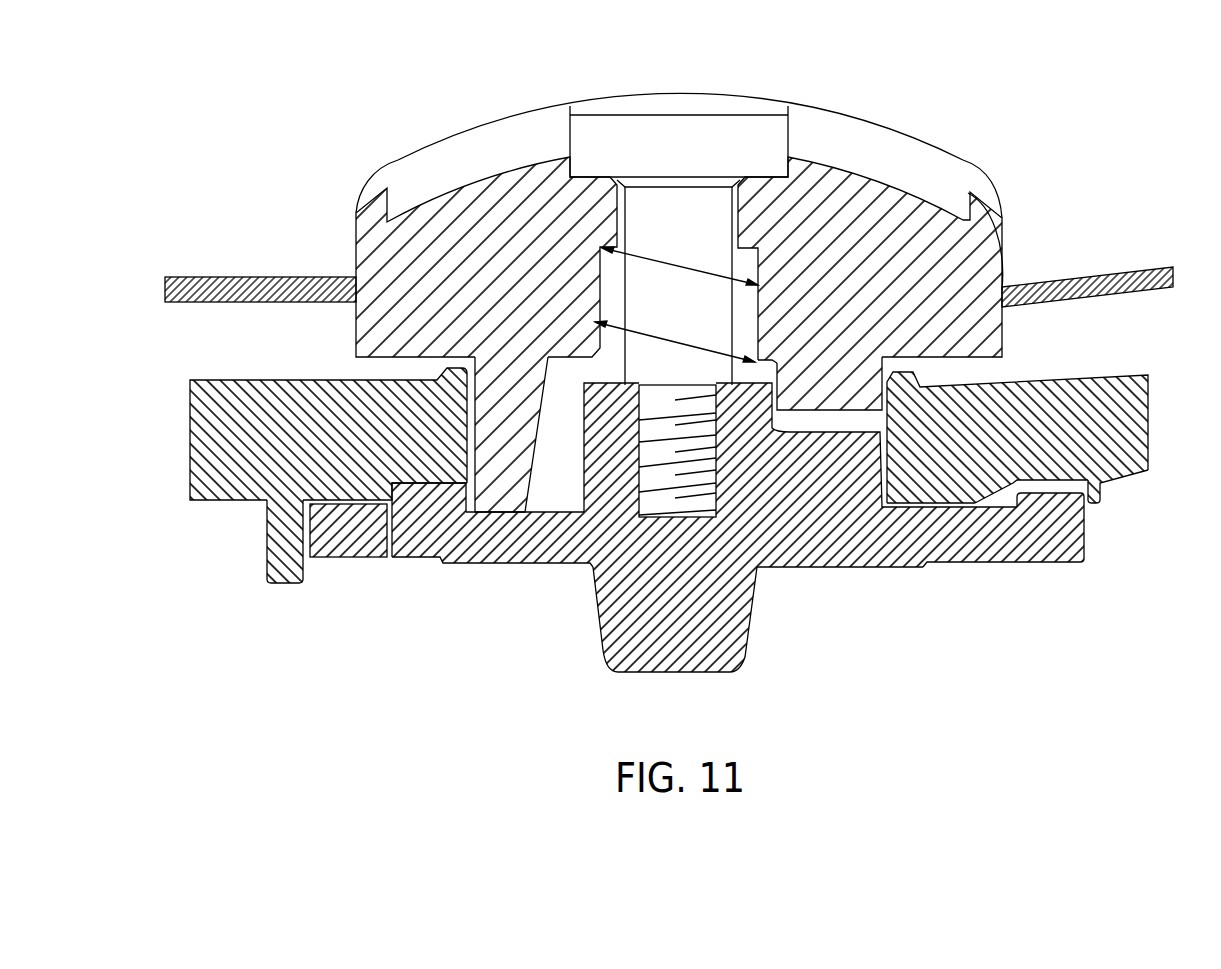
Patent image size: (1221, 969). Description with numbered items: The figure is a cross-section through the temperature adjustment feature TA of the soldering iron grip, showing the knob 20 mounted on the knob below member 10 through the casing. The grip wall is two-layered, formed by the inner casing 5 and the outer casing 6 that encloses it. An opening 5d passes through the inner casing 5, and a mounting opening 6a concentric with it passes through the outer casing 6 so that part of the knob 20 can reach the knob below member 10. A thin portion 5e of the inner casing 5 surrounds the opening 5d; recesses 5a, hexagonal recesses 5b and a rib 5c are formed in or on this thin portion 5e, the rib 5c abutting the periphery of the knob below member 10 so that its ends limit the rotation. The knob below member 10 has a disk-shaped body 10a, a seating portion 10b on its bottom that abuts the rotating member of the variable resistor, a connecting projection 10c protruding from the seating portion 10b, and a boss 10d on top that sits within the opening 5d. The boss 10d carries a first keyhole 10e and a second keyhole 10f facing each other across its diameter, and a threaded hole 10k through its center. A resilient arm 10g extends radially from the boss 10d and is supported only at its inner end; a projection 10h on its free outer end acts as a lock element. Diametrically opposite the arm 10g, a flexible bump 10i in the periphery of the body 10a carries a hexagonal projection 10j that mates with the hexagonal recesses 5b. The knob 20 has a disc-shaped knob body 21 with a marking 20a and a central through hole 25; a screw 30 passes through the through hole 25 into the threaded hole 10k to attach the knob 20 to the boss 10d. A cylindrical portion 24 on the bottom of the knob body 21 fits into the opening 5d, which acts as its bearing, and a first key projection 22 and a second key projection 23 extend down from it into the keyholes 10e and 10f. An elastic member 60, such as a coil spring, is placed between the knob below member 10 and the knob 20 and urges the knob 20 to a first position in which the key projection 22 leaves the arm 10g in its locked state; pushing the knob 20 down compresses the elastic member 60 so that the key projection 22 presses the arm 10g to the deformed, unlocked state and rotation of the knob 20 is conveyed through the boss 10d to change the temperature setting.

The temperature adjustment feature TA is at (400, 110).
The inner casing 5 is at (676, 466).
The recesses 5a is at (437, 485).
The hexagonal recess 5b is at (1065, 485).
The rib 5c is at (280, 543).
The opening 5d is at (488, 387).
The thin portion 5e is at (970, 503).
The outer casing 6 is at (669, 212).
The mounting opening 6a is at (963, 220).
The knob below member 10 is at (753, 490).
The body 10a is at (763, 542).
The seating portion 10b is at (883, 567).
The connecting projection 10c is at (712, 653).
The boss 10d is at (755, 383).
The first keyhole 10e is at (565, 427).
The second keyhole 10f is at (820, 430).
The arm 10g is at (520, 540).
The projection 10h is at (423, 522).
The bump 10i is at (1027, 548).
The hexagonal projection 10j is at (1050, 490).
The threaded hole 10k is at (640, 425).
The knob 20 is at (630, 364).
The marking 20a is at (497, 140).
The knob body 21 is at (450, 334).
The first key projection 22 is at (522, 448).
The second key projection 23 is at (832, 402).
The cylindrical portion 24 is at (870, 370).
The through hole 25 is at (625, 233).
The screw 30 is at (610, 122).
The elastic member 60 is at (690, 265).